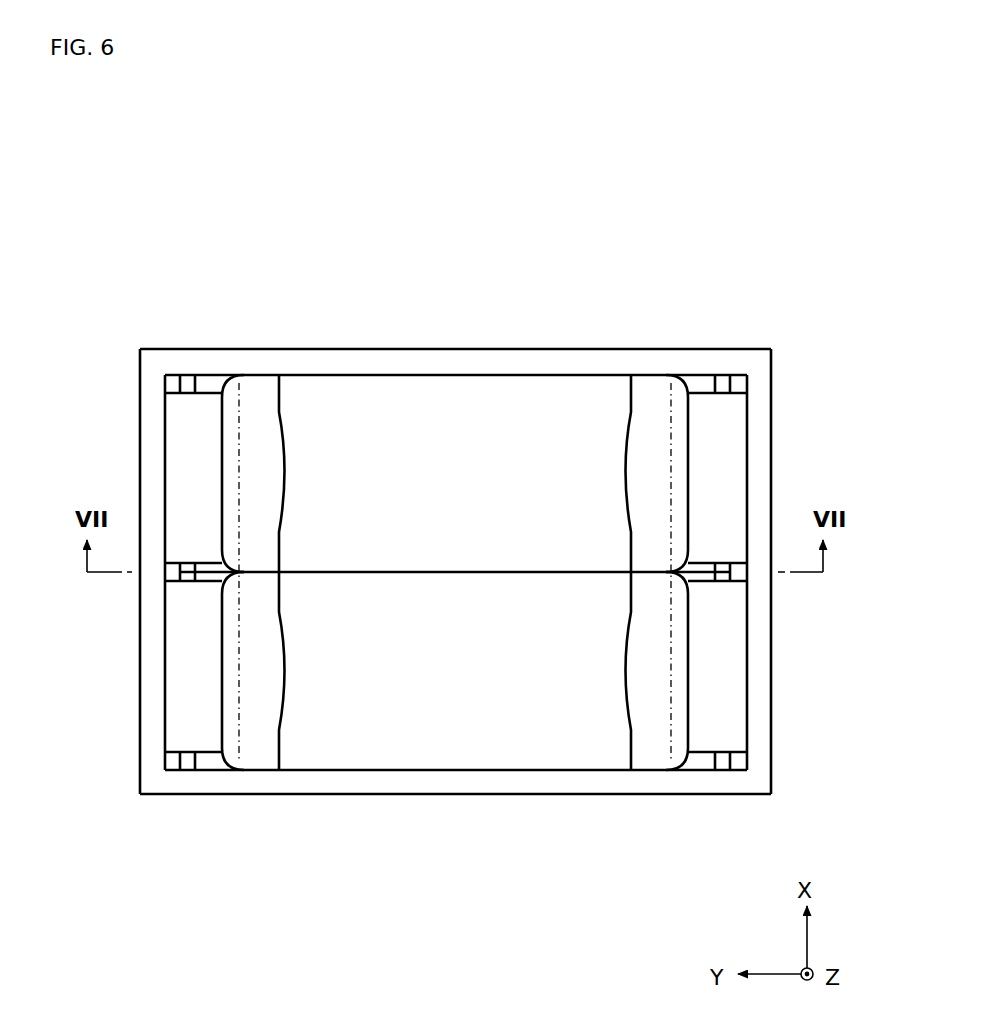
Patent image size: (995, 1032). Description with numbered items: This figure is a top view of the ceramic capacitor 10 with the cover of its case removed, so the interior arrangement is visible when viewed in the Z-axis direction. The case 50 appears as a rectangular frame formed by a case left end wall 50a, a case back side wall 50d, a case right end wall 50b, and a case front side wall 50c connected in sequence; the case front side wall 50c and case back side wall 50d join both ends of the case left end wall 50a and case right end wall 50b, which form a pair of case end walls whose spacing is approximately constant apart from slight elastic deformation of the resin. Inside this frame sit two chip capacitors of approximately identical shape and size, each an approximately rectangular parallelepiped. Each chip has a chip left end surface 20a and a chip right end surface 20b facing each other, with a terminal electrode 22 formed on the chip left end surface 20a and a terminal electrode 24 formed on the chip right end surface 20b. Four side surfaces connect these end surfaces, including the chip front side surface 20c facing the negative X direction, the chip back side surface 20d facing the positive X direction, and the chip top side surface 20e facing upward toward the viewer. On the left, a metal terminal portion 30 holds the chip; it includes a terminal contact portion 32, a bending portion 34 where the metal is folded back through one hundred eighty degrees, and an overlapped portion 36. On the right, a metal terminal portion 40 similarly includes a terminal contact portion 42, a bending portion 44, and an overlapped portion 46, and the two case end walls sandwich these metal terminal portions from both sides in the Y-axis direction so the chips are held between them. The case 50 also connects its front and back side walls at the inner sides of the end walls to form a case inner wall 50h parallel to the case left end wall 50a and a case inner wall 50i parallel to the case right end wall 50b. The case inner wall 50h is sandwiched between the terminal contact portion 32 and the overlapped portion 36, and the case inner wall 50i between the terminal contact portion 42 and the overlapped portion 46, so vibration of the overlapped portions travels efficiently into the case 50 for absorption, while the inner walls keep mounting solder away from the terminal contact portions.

The ceramic capacitor 10 is at (590, 291).
The chip left end surface 20a is at (222, 415).
The chip right end surface 20b is at (692, 437).
The chip front side surface 20c is at (525, 770).
The chip back side surface 20d is at (360, 368).
The chip top side surface 20e is at (479, 484).
The terminal electrode 22 is at (253, 515).
The terminal electrode 24 is at (660, 508).
The metal terminal portion 30 is at (155, 370).
The terminal contact portion 32 is at (222, 675).
The bending portion 34 is at (185, 685).
The overlapped portion 36 is at (163, 618).
The metal terminal portion 40 is at (759, 383).
The terminal contact portion 42 is at (693, 668).
The bending portion 44 is at (730, 463).
The overlapped portion 46 is at (747, 635).
The case 50 is at (768, 334).
The case left end wall 50a is at (152, 435).
The case right end wall 50b is at (757, 498).
The case front side wall 50c is at (430, 780).
The case back side wall 50d is at (493, 350).
The case inner wall 50h is at (182, 573).
The case inner wall 50i is at (722, 568).